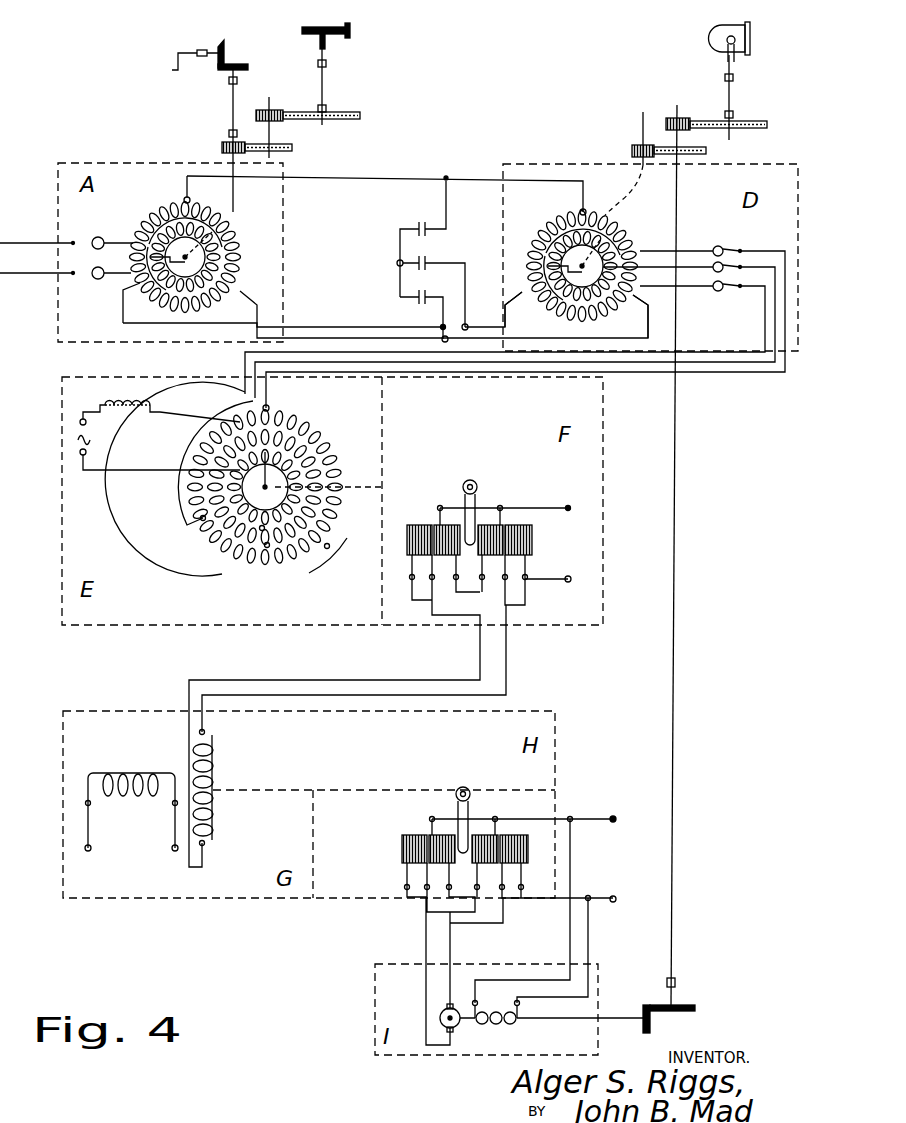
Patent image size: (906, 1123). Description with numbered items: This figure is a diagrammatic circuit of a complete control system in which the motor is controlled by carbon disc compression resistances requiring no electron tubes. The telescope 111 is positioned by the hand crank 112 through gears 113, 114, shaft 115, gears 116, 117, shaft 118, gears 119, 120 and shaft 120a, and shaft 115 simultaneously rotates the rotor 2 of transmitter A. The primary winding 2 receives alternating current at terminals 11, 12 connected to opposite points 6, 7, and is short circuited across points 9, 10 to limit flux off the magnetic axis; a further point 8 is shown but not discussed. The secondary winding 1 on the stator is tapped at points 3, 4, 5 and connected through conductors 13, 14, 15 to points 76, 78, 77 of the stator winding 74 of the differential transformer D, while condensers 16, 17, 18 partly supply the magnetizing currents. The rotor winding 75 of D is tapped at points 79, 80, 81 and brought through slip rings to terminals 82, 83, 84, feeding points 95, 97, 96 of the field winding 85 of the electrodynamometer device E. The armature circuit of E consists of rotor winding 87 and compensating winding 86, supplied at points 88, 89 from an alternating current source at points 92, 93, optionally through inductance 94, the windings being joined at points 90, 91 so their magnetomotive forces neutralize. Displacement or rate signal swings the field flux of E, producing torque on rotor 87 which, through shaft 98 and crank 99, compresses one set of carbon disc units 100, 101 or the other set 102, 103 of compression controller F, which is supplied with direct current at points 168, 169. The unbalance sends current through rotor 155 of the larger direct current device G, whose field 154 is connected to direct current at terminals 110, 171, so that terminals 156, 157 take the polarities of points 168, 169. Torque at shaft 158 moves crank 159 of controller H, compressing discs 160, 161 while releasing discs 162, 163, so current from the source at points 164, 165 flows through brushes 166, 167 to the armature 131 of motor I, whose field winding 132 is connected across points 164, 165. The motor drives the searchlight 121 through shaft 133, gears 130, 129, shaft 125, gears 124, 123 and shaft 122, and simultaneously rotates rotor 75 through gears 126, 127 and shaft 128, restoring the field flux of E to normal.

The secondary winding 1 is at (232, 250).
The primary winding 2 is at (237, 262).
The tap point 3 is at (186, 197).
The tap point 4 is at (136, 295).
The tap point 5 is at (246, 287).
The connection point 6 is at (186, 310).
The connection point 7 is at (152, 214).
The rotor brush lead 8 is at (225, 236).
The short-circuit point 9 is at (245, 262).
The short-circuit point 10 is at (110, 252).
The power terminal 11 is at (78, 240).
The power terminal 12 is at (78, 277).
The conductor 13 is at (378, 177).
The conductor 14 is at (312, 326).
The conductor 15 is at (342, 337).
The condenser 16 is at (432, 220).
The condenser 17 is at (434, 257).
The condenser 18 is at (434, 293).
The primary winding 74 is at (608, 218).
The rotor winding 75 is at (636, 246).
The tap point 76 is at (580, 211).
The tap point 77 is at (634, 302).
The tap point 78 is at (536, 301).
The tap point 79 is at (612, 234).
The tap point 80 is at (620, 306).
The tap point 81 is at (559, 306).
The slip ring terminal 82 is at (742, 249).
The slip ring terminal 83 is at (744, 266).
The slip ring terminal 84 is at (740, 288).
The field winding 85 is at (312, 438).
The compensating winding 86 is at (302, 452).
The rotor winding 87 is at (330, 466).
The supply point 88 is at (270, 440).
The supply point 89 is at (260, 489).
The connection point 90 is at (260, 531).
The connection point 91 is at (267, 548).
The alternating current supply point 92 is at (80, 421).
The alternating current supply point 93 is at (80, 455).
The inductance 94 is at (136, 405).
The field winding point 95 is at (270, 414).
The field winding point 96 is at (201, 527).
The field winding point 97 is at (329, 548).
The shaft 98 is at (406, 486).
The operating crank 99 is at (480, 486).
The carbon disc resistor unit 100 is at (424, 525).
The carbon disc resistor unit 101 is at (450, 540).
The carbon disc resistor unit 102 is at (500, 530).
The carbon disc resistor unit 103 is at (523, 526).
The negative terminal 110 is at (92, 849).
The telescope 111 is at (310, 28).
The hand crank 112 is at (175, 67).
The gear 113 is at (228, 43).
The gear 114 is at (247, 65).
The shaft 115 is at (230, 107).
The gear 116 is at (222, 147).
The gear 117 is at (292, 148).
The shaft 118 is at (271, 134).
The gear 119 is at (276, 110).
The gear 120 is at (360, 116).
The shaft 120a is at (324, 90).
The searchlight 121 is at (755, 42).
The shaft 122 is at (731, 98).
The gear 123 is at (758, 122).
The gear 124 is at (683, 118).
The shaft 125 is at (679, 145).
The gear 126 is at (707, 159).
The gear 127 is at (632, 150).
The shaft 128 is at (621, 164).
The gear 129 is at (690, 1004).
The gear 130 is at (655, 1033).
The armature 131 is at (440, 1030).
The field winding 132 is at (502, 1025).
The shaft 133 is at (610, 1016).
The field 154 is at (131, 772).
The rotor winding 155 is at (214, 768).
The terminal 156 is at (206, 733).
The terminal 157 is at (206, 848).
The shaft 158 is at (380, 791).
The crank 159 is at (472, 806).
The carbon disc resistor 160 is at (402, 832).
The carbon disc resistor 161 is at (440, 838).
The carbon disc resistor 162 is at (496, 838).
The carbon disc resistor 163 is at (532, 826).
The direct current supply point 164 is at (616, 817).
The direct current supply point 165 is at (616, 896).
The brush 166 is at (445, 1008).
The brush 167 is at (455, 1031).
The direct current supply point 168 is at (572, 506).
The direct current supply point 169 is at (572, 577).
The field terminal 171 is at (172, 852).